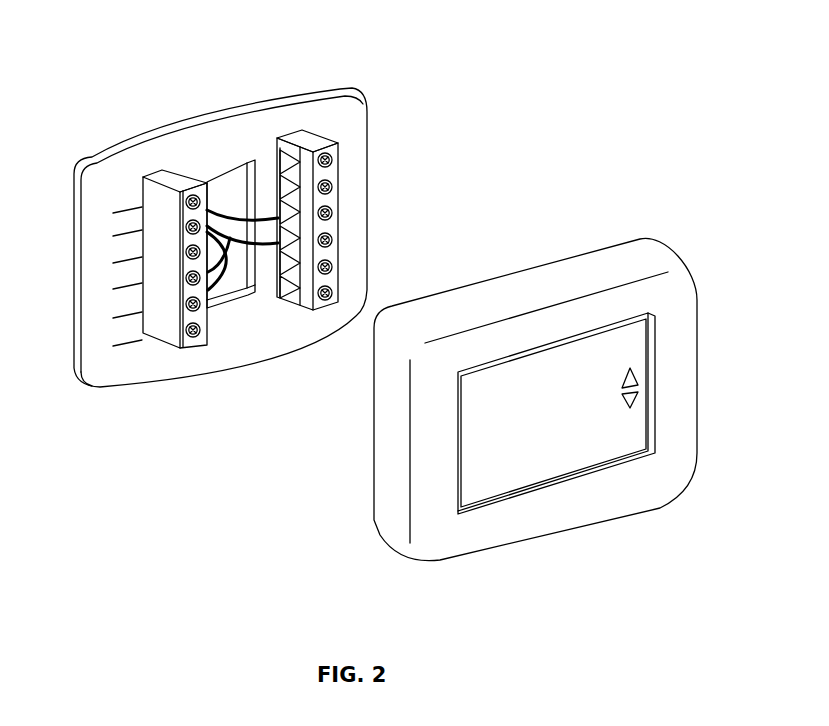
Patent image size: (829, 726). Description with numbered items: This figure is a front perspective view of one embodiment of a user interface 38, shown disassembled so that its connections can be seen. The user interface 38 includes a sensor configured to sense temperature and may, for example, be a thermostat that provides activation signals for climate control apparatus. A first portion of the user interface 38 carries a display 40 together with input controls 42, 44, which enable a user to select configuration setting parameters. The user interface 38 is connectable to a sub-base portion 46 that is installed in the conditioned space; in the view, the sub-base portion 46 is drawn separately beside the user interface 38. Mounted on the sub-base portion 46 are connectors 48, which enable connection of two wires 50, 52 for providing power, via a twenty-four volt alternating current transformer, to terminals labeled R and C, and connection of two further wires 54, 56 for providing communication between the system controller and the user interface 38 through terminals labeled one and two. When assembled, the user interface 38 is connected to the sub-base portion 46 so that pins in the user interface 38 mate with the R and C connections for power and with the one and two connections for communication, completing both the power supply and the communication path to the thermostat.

The user interface 38 is at (670, 253).
The display 40 is at (513, 470).
The input control 42 is at (640, 360).
The input control 44 is at (640, 380).
The sub-base portion 46 is at (360, 98).
The connectors 48 is at (337, 300).
The wire 50 is at (225, 296).
The wire 52 is at (212, 302).
The wire 54 is at (237, 302).
The wire 56 is at (234, 219).